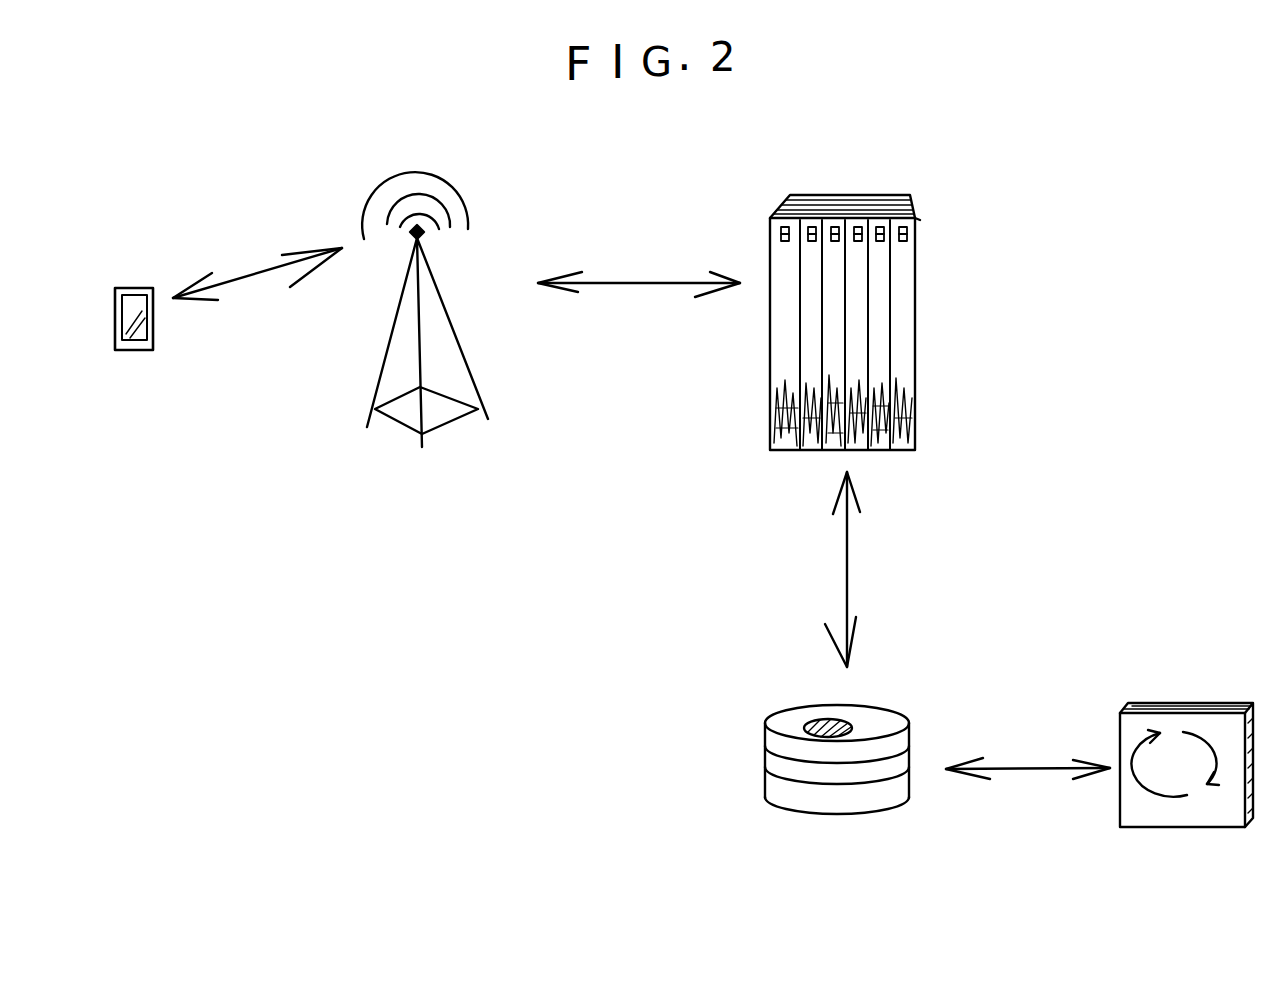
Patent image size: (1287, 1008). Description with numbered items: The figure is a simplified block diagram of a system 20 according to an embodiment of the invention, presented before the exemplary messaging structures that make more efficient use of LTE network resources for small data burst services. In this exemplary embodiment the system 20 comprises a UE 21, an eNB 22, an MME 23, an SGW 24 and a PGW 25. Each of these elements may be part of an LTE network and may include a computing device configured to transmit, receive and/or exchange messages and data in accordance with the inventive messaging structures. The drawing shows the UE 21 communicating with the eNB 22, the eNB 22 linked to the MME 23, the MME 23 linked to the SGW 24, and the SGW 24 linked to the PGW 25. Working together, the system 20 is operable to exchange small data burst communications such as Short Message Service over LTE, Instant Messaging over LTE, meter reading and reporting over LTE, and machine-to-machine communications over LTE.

The system 20 is at (420, 645).
The UE 21 is at (117, 370).
The eNB 22 is at (383, 460).
The MME 23 is at (924, 282).
The SGW 24 is at (758, 812).
The PGW 25 is at (1140, 679).